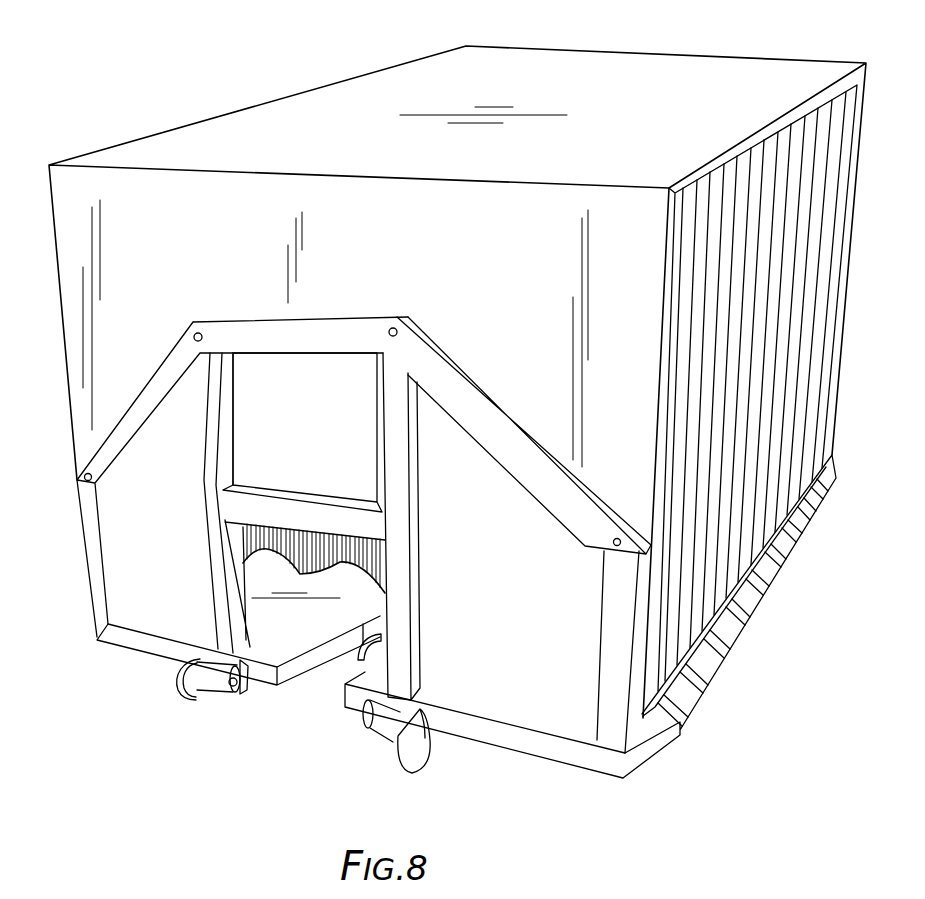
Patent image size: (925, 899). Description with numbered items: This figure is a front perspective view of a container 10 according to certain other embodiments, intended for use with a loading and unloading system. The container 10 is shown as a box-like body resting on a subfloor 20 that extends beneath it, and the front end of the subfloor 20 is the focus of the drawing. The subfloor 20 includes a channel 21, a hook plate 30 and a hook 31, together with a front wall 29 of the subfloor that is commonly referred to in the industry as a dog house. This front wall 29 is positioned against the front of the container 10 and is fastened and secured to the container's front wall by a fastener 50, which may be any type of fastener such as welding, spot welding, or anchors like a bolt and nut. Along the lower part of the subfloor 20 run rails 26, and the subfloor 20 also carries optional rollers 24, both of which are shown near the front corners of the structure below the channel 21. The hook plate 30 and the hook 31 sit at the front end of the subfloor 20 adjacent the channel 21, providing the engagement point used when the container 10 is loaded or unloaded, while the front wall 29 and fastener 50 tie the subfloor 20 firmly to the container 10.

The container 10 is at (287, 108).
The subfloor 20 is at (735, 654).
The channel 21 is at (313, 687).
The rollers 24 is at (210, 684).
The rails 26 is at (172, 690).
The front wall 29 is at (296, 437).
The hook plate 30 is at (353, 589).
The hook 31 is at (377, 647).
The fastener 50 is at (78, 481).